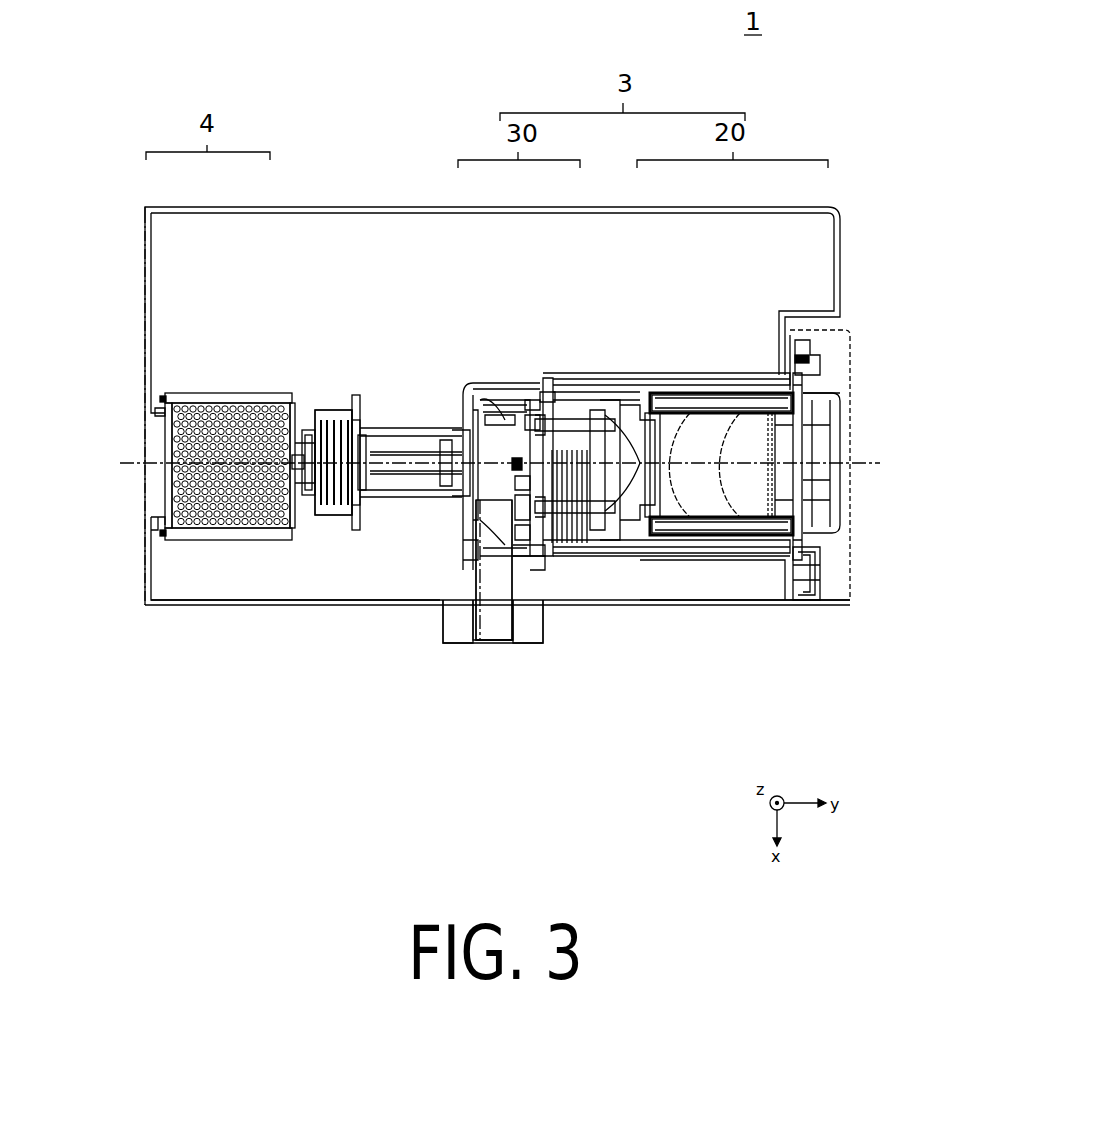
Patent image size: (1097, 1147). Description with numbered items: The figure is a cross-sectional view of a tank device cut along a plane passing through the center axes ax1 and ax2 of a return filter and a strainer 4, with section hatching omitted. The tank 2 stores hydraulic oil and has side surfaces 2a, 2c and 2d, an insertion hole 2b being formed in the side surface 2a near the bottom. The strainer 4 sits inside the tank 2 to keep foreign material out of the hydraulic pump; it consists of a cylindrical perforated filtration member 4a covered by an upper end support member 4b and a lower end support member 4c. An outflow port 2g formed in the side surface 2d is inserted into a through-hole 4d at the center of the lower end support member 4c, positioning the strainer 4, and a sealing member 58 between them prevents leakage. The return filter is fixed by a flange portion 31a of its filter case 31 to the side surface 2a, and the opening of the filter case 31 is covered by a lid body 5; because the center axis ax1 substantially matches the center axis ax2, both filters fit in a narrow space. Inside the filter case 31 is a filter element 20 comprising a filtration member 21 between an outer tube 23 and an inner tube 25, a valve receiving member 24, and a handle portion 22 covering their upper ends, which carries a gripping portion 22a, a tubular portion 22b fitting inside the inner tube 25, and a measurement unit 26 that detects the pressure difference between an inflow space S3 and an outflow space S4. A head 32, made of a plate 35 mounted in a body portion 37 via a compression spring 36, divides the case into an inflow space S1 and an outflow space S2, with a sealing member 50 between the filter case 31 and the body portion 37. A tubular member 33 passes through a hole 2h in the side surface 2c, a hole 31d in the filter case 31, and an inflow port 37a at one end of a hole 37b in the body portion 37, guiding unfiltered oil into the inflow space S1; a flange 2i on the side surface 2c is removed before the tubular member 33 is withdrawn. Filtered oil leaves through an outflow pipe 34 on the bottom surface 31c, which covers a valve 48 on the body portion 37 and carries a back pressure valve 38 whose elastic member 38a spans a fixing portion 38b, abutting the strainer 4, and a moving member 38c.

The tank 2 is at (325, 206).
The side surface 2a is at (815, 598).
The insertion hole 2b is at (777, 600).
The side surface 2c is at (212, 603).
The side surface 2d is at (148, 288).
The outflow port 2g is at (160, 515).
The hole 2h is at (511, 614).
The flange 2i is at (522, 632).
The strainer 4 is at (204, 347).
The filtration member 4a is at (203, 398).
The upper end support member 4b is at (306, 405).
The lower end support member 4c is at (167, 392).
The through-hole 4d is at (165, 414).
The lid body 5 is at (836, 346).
The filter element 20 is at (739, 448).
The filtration member 21 is at (777, 440).
The handle portion 22 is at (802, 398).
The gripping portion 22a is at (836, 417).
The tubular portion 22b is at (847, 392).
The outer tube 23 is at (737, 395).
The valve receiving member 24 is at (662, 420).
The inner tube 25 is at (700, 440).
The measurement unit 26 is at (822, 575).
The filter case 31 is at (560, 380).
The flange portion 31a is at (806, 348).
The bottom surface 31c is at (465, 545).
The hole 31d is at (525, 560).
The head 32 is at (546, 378).
The tubular member 33 is at (492, 612).
The outflow pipe 34 is at (462, 395).
The plate 35 is at (602, 552).
The compression spring 36 is at (587, 548).
The body portion 37 is at (481, 588).
The inflow port 37a is at (542, 556).
The hole 37b is at (512, 410).
The back pressure valve 38 is at (343, 410).
The elastic member 38a is at (355, 518).
The fixing portion 38b is at (336, 518).
The moving member 38c is at (368, 525).
The valve 48 is at (433, 436).
The sealing member 50 is at (537, 396).
The sealing member 58 is at (152, 528).
The inflow space S1 is at (596, 402).
The outflow space S2 is at (690, 590).
The inflow space S3 is at (741, 556).
The outflow space S4 is at (700, 556).
The center axis ax1 is at (838, 478).
The center axis ax2 is at (160, 463).